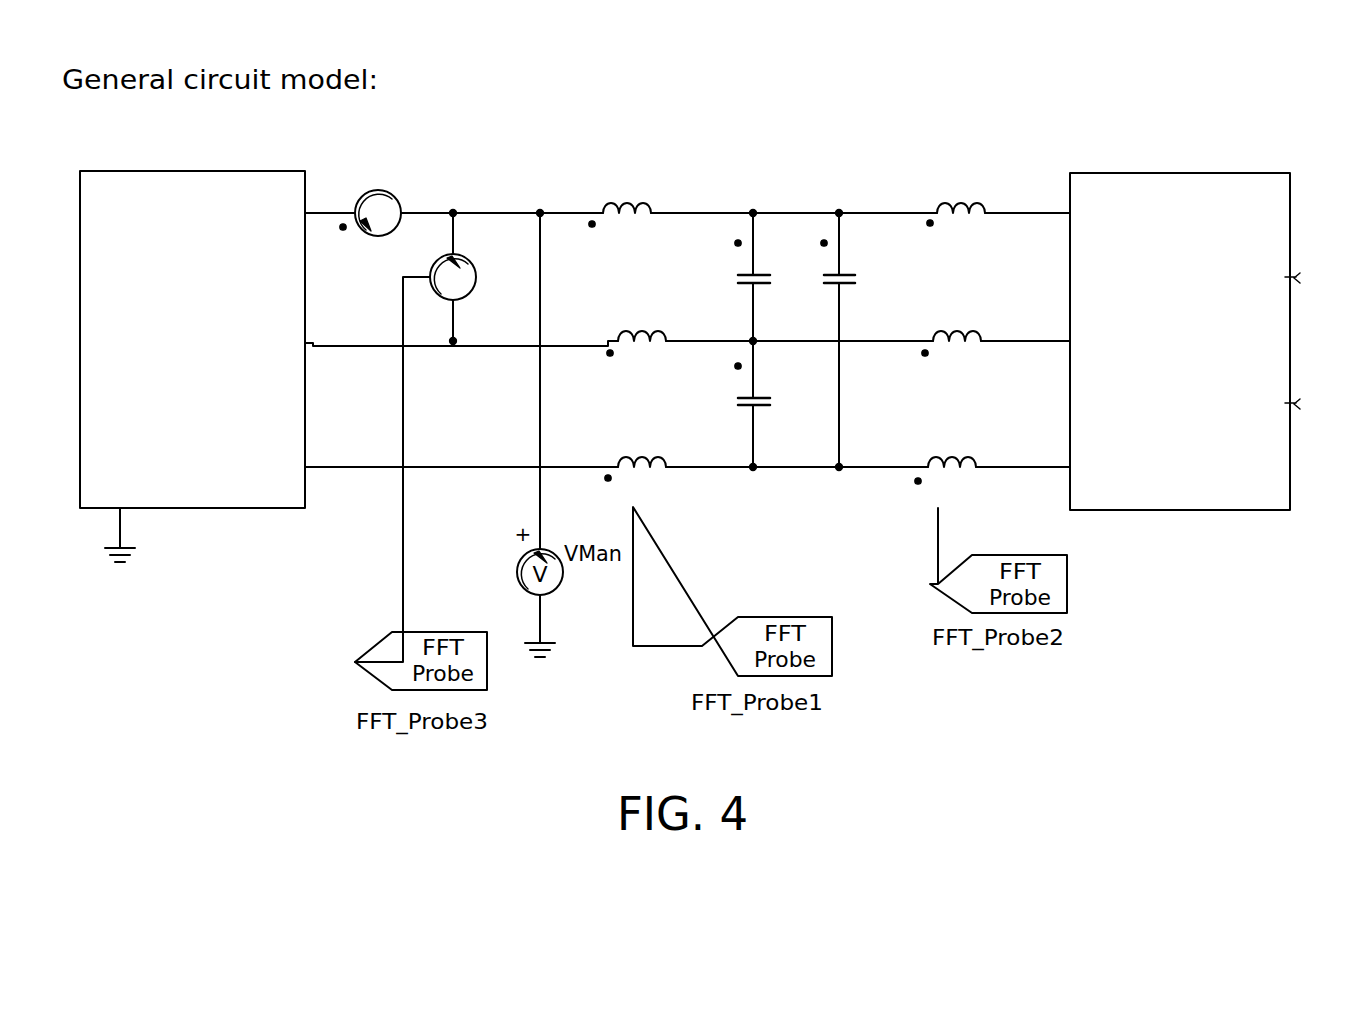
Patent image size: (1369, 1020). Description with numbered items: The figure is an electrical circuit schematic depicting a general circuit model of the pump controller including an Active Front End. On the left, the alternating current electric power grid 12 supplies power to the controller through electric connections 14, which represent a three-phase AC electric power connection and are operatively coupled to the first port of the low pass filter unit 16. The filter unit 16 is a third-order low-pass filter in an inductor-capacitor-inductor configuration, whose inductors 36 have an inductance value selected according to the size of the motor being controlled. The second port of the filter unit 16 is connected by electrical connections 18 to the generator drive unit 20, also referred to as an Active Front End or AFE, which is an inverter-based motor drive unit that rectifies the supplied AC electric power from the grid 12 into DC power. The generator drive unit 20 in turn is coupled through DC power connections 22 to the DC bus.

The alternating current electric power grid 12 is at (230, 508).
The electric connections 14 is at (330, 158).
The low pass filter unit 16 is at (798, 297).
The electrical connections 18 is at (1028, 491).
The generator drive unit 20 is at (1182, 173).
The DC power connections 22 is at (1305, 272).
The inductors 36 is at (650, 203).